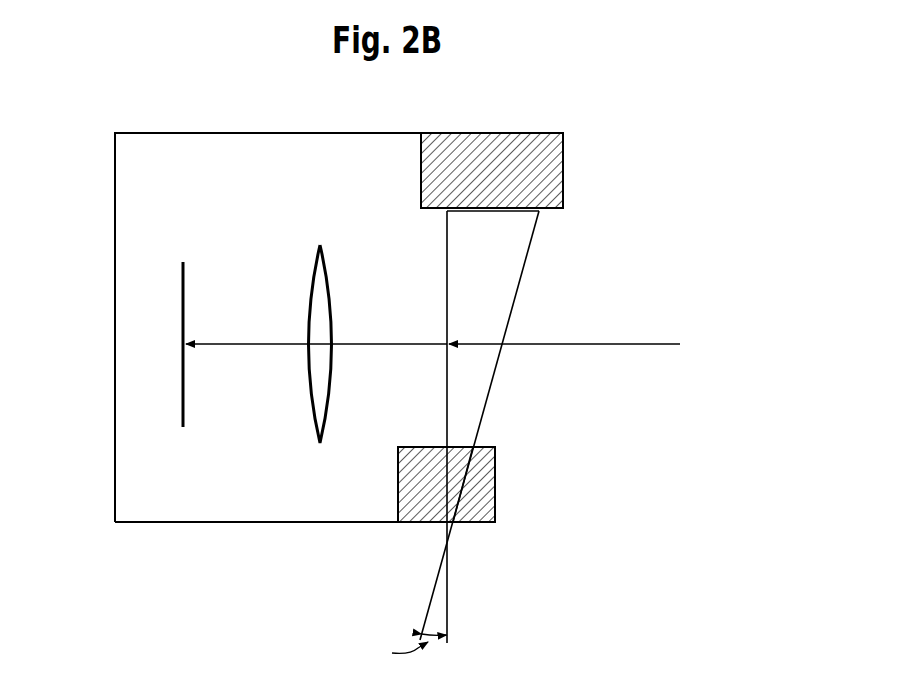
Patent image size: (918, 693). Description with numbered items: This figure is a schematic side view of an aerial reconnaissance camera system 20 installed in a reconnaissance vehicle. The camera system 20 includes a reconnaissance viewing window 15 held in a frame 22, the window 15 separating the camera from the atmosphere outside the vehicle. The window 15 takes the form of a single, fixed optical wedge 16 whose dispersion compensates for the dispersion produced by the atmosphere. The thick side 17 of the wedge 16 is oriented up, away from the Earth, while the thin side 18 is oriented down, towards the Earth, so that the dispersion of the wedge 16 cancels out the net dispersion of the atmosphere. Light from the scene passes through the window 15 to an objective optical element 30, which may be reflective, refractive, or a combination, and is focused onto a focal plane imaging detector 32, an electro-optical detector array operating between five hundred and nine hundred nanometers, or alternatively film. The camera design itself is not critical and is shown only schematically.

The reconnaissance viewing window 15 is at (540, 282).
The optical wedge 16 is at (523, 240).
The thick side 17 is at (472, 212).
The thin side 18 is at (462, 447).
The aerial reconnaissance camera system 20 is at (120, 132).
The frame 22 is at (563, 168).
The objective optical element 30 is at (322, 245).
The focal plane imaging detector 32 is at (184, 277).